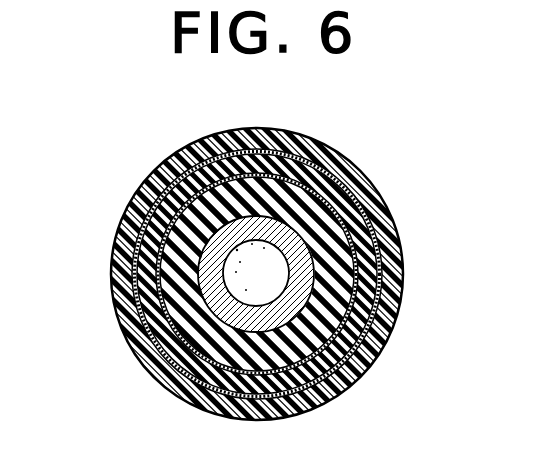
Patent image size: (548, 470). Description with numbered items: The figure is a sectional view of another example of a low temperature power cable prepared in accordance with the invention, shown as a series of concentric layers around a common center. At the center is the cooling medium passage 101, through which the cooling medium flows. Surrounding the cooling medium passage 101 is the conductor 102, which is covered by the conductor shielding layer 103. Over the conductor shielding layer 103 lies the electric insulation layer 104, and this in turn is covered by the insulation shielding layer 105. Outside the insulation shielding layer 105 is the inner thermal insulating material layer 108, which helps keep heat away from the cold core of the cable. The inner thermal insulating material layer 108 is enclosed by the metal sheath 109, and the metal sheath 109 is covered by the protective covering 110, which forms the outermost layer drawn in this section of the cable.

The cooling medium passage 101 is at (158, 166).
The conductor 102 is at (192, 152).
The conductor shielding layer 103 is at (220, 173).
The electric insulation layer 104 is at (233, 257).
The insulation shielding layer 105 is at (287, 153).
The inner thermal insulating material layer 108 is at (323, 168).
The metal sheath 109 is at (352, 200).
The protective covering 110 is at (383, 228).